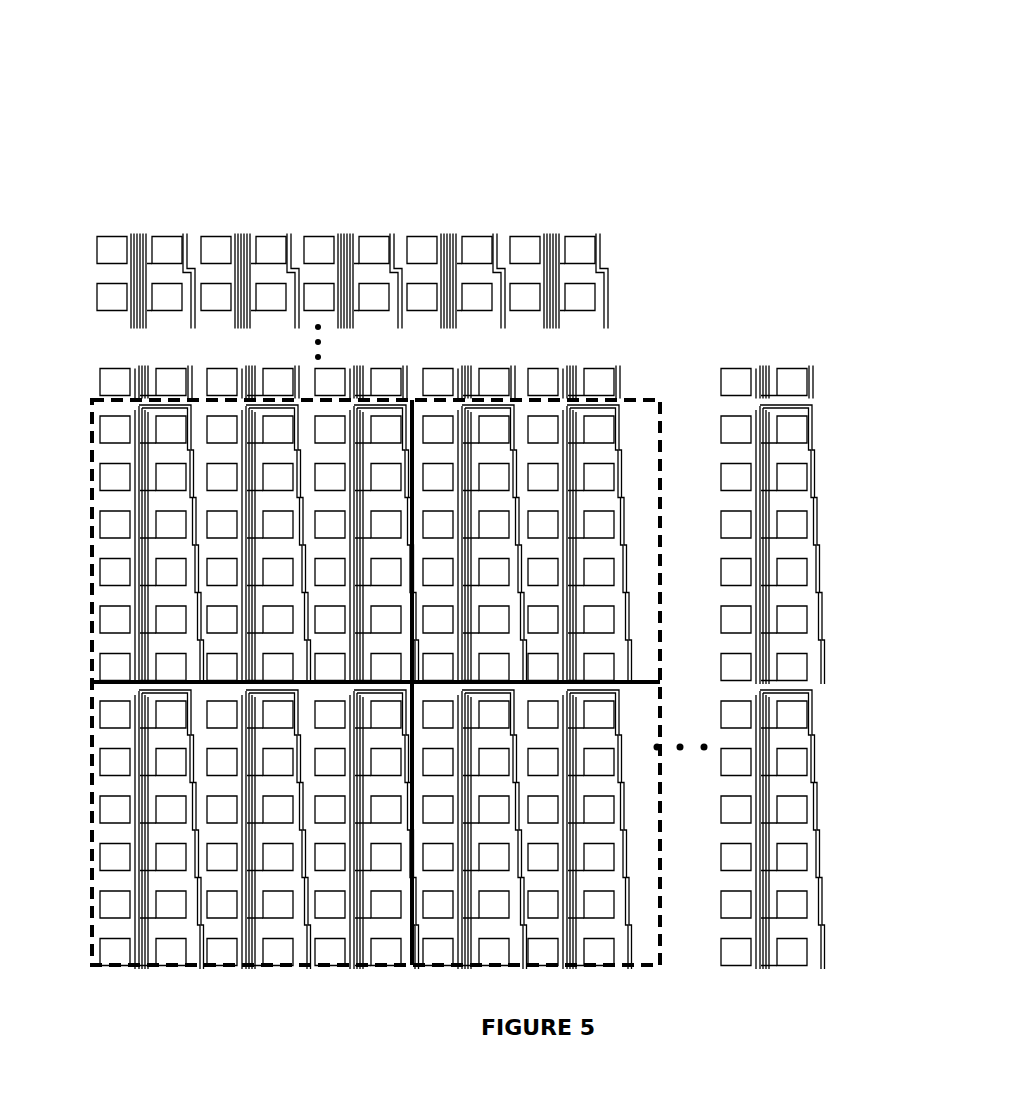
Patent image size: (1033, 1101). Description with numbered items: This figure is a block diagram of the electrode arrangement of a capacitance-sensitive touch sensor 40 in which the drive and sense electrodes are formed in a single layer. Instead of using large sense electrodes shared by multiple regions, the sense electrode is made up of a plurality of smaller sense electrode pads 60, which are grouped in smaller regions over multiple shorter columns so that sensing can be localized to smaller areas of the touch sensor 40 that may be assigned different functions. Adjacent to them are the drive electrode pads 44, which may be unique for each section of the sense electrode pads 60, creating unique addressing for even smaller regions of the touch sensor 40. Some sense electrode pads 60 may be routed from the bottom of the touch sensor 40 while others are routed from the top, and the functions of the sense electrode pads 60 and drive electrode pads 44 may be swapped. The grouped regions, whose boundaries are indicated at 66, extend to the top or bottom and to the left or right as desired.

The touch sensor 40 is at (557, 130).
The sense electrode pads 60 is at (316, 235).
The drive electrode pads 44 is at (470, 235).
The tile boundaries 66 is at (527, 677).